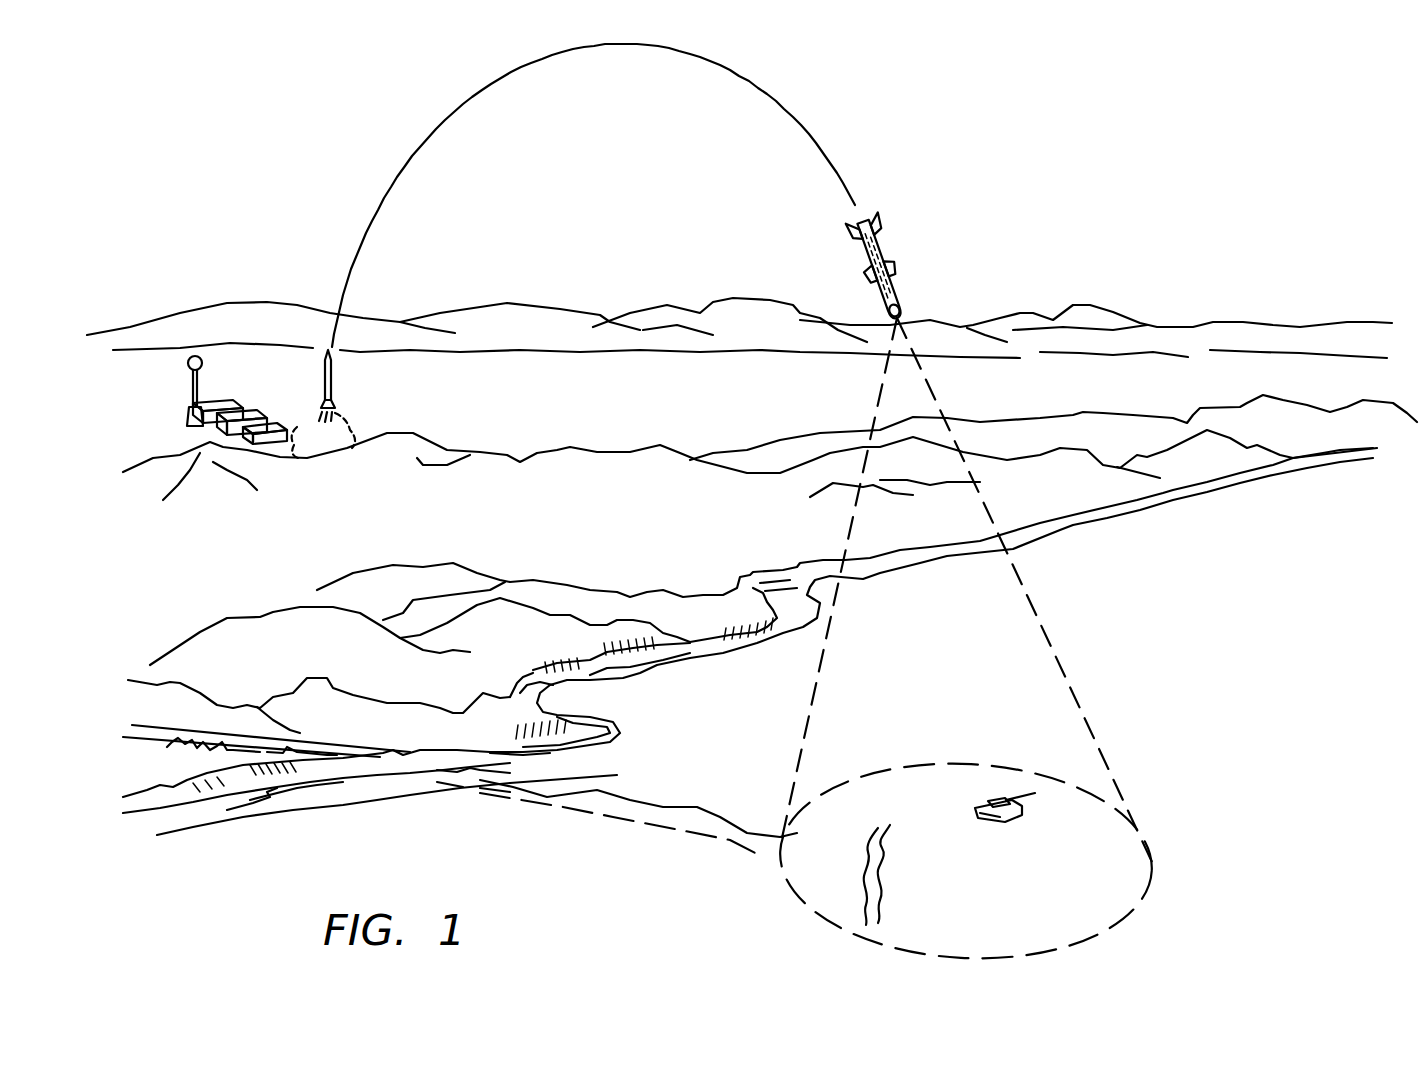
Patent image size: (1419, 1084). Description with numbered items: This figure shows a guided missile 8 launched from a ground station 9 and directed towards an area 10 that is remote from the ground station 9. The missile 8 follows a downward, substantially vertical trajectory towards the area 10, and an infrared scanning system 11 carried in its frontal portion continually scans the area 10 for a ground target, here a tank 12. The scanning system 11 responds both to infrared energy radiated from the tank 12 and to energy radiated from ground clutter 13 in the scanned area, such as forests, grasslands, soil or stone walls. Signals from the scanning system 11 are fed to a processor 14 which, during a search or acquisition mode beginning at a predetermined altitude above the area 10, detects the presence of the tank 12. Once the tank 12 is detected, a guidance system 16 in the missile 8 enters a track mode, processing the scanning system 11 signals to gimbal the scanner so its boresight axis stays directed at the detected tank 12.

The guided missile 8 is at (916, 233).
The ground station 9 is at (247, 394).
The area 10 is at (991, 844).
The infrared scanning system 11 is at (897, 283).
The tank 12 is at (977, 812).
The ground clutter 13 is at (885, 887).
The processor 14 is at (883, 250).
The guidance system 16 is at (877, 229).